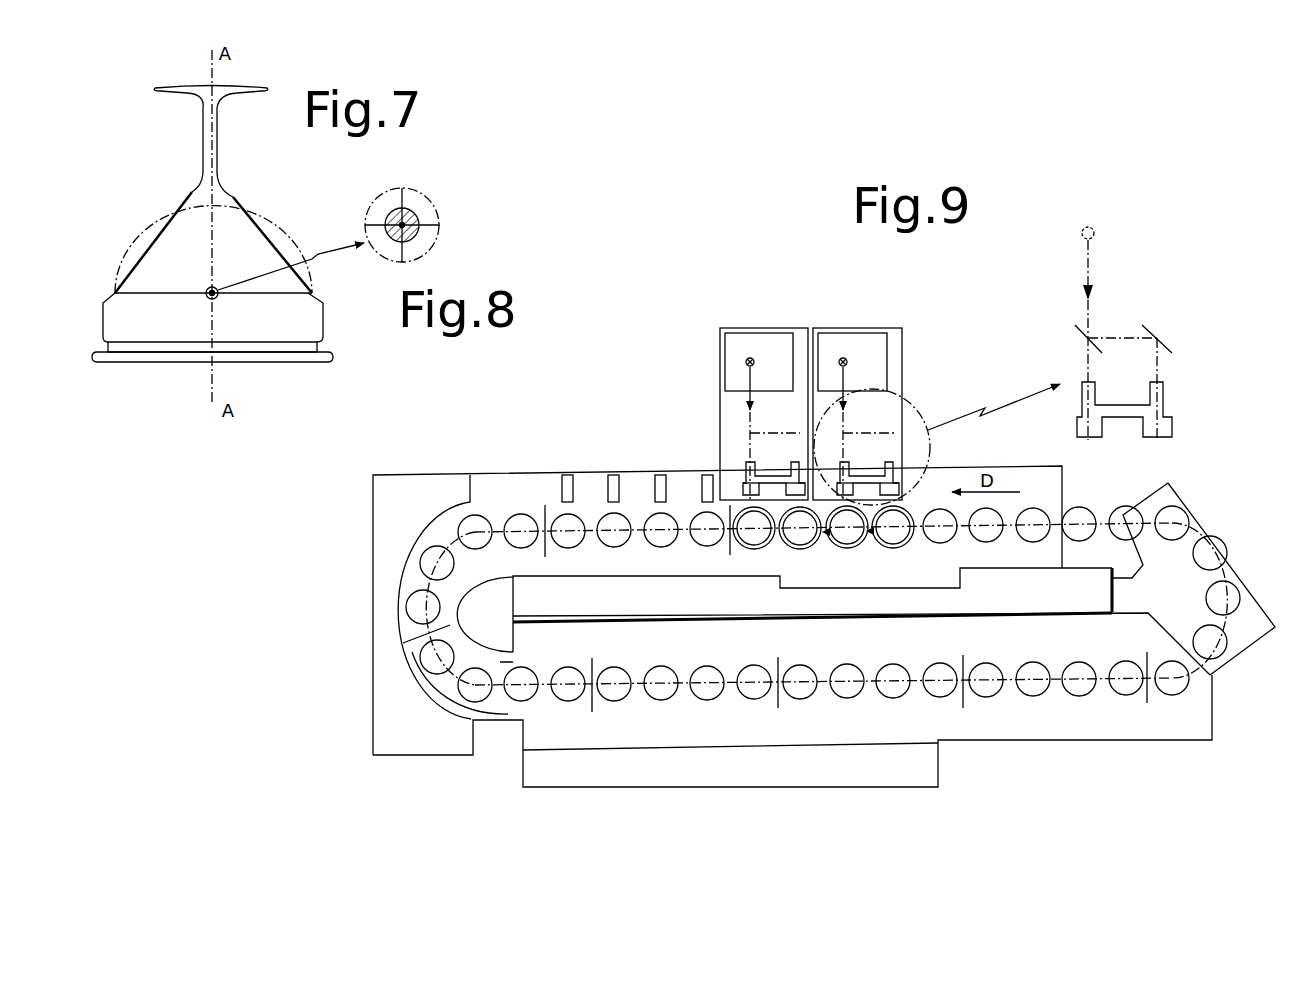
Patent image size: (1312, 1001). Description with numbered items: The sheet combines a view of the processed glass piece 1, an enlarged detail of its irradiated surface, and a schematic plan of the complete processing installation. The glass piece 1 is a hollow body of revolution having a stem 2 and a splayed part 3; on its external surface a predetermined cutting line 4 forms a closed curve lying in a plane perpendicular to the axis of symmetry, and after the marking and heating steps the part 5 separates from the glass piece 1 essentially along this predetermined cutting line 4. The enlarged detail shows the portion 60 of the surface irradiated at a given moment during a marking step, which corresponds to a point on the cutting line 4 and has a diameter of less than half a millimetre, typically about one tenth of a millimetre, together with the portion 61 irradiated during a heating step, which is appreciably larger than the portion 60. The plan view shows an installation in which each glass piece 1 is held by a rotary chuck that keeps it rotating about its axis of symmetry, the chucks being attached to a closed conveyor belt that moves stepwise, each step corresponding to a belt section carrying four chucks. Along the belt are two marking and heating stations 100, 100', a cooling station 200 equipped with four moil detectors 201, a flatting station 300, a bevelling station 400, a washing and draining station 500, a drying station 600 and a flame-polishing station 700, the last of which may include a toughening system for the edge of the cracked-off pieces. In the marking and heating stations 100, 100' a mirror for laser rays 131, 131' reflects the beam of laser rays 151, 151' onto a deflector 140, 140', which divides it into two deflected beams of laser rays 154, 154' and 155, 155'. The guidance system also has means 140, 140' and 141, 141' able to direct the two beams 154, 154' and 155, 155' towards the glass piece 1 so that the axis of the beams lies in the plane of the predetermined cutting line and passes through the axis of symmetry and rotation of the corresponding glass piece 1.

In FIG. 7, the glass piece 1 is at (145, 238).
In FIG. 9, the glass piece 1 is at (870, 546).
In FIG. 7, the stem 2 is at (202, 100).
In FIG. 7, the splayed part 3 is at (261, 227).
In FIG. 7, the predetermined cutting line 4 is at (175, 292).
In FIG. 8, the predetermined cutting line 4 is at (385, 218).
In FIG. 7, the part 5 is at (120, 325).
In FIG. 8, the portion irradiated during a marking step 60 is at (408, 218).
In FIG. 8, the portion irradiated during a heating step 61 is at (418, 235).
In FIG. 9, the marking and heating station 100 is at (747, 358).
In FIG. 9, the marking and heating station 100' is at (857, 365).
In FIG. 9, the mirror for laser rays 131 is at (760, 332).
In FIG. 9, the mirror for laser rays 131' is at (856, 327).
In FIG. 9, the deflector 140 is at (735, 423).
In FIG. 9, the deflector 140' is at (896, 426).
In FIG. 9, the means for directing beams 141 is at (779, 420).
In FIG. 9, the means for directing beams 141' is at (905, 409).
In FIG. 9, the reflected beam of laser rays 151 is at (699, 402).
In FIG. 9, the reflected beam of laser rays 151' is at (909, 397).
In FIG. 9, the deflected beam of laser rays 154 is at (722, 441).
In FIG. 9, the deflected beam of laser rays 154' is at (864, 461).
In FIG. 9, the deflected beam of laser rays 155 is at (779, 464).
In FIG. 9, the deflected beam of laser rays 155' is at (931, 460).
In FIG. 9, the cooling station 200 is at (557, 546).
In FIG. 9, the moil detectors 201 is at (707, 474).
In FIG. 9, the flatting station 300 is at (542, 549).
In FIG. 9, the bevelling station 400 is at (507, 702).
In FIG. 9, the washing and draining station 500 is at (603, 703).
In FIG. 9, the drying station 600 is at (785, 696).
In FIG. 9, the flame-polishing station 700 is at (973, 697).